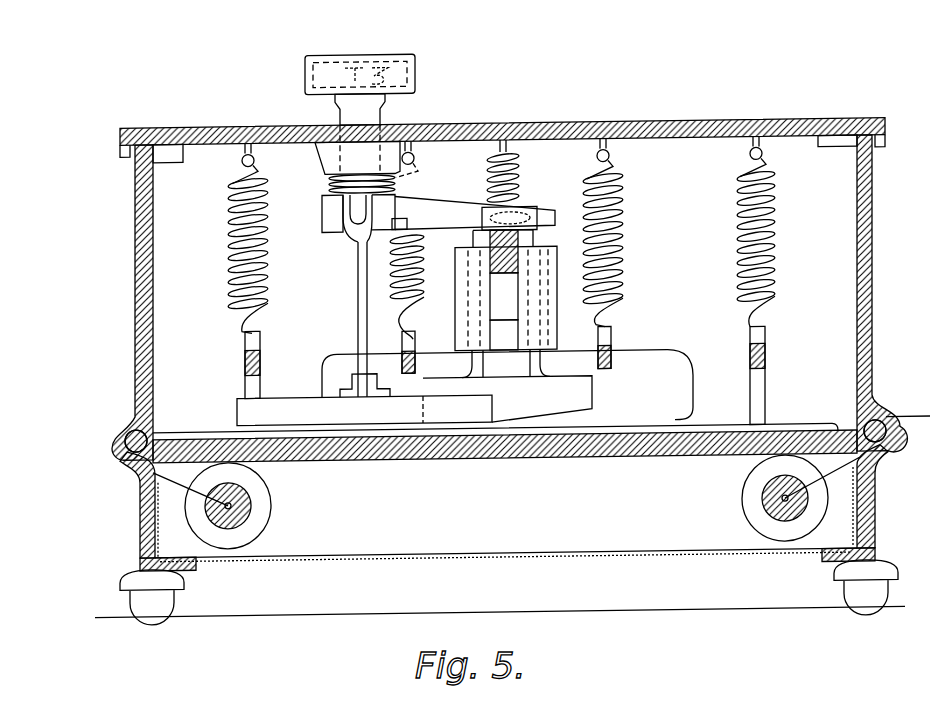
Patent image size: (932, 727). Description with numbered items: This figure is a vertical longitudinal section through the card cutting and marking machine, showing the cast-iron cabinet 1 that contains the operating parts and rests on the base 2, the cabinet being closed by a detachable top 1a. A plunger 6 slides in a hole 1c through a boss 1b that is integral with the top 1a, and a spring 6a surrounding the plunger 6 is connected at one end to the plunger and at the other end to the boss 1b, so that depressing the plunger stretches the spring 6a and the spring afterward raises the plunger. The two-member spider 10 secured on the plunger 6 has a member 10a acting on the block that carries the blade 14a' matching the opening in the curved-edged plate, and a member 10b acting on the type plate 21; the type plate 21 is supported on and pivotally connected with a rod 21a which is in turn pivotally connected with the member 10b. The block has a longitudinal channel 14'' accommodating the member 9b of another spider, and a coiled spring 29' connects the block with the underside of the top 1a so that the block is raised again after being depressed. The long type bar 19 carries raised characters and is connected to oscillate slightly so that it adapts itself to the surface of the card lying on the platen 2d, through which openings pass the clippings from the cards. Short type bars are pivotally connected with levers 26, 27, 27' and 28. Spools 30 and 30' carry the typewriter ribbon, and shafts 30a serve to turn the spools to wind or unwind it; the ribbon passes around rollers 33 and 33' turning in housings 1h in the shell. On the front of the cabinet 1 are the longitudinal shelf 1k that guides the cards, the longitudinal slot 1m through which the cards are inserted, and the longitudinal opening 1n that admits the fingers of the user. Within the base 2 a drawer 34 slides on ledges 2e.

The cabinet 1 is at (862, 243).
The detachable top 1a is at (678, 121).
The boss 1b is at (326, 160).
The hole 1c is at (420, 128).
The housing 1h is at (132, 418).
The longitudinal shelf 1k is at (690, 430).
The longitudinal slot 1m is at (215, 428).
The longitudinal opening 1n is at (664, 362).
The base 2 is at (144, 518).
The platen 2d is at (556, 458).
The ledge 2e is at (194, 564).
The plunger 6 is at (366, 62).
The spring 6a is at (336, 186).
The member of spider 9b is at (505, 292).
The two-member spider 10 is at (330, 230).
The member of spider 10a is at (448, 214).
The member of spider 10b is at (362, 216).
The longitudinal channel 14'' is at (530, 342).
The blade 14a' is at (536, 399).
The long type bar 19 is at (548, 266).
The type plate 21 is at (296, 416).
The rod 21a is at (358, 308).
The lever 26 is at (767, 354).
The lever 27 is at (619, 253).
The lever 27' is at (422, 296).
The lever 28 is at (262, 360).
The coiled spring 29' is at (523, 184).
The spool 30 is at (251, 506).
The spool 30' is at (764, 498).
The shaft 30a is at (244, 512).
The roller 33 is at (156, 428).
The roller 33' is at (897, 408).
The drawer 34 is at (466, 551).